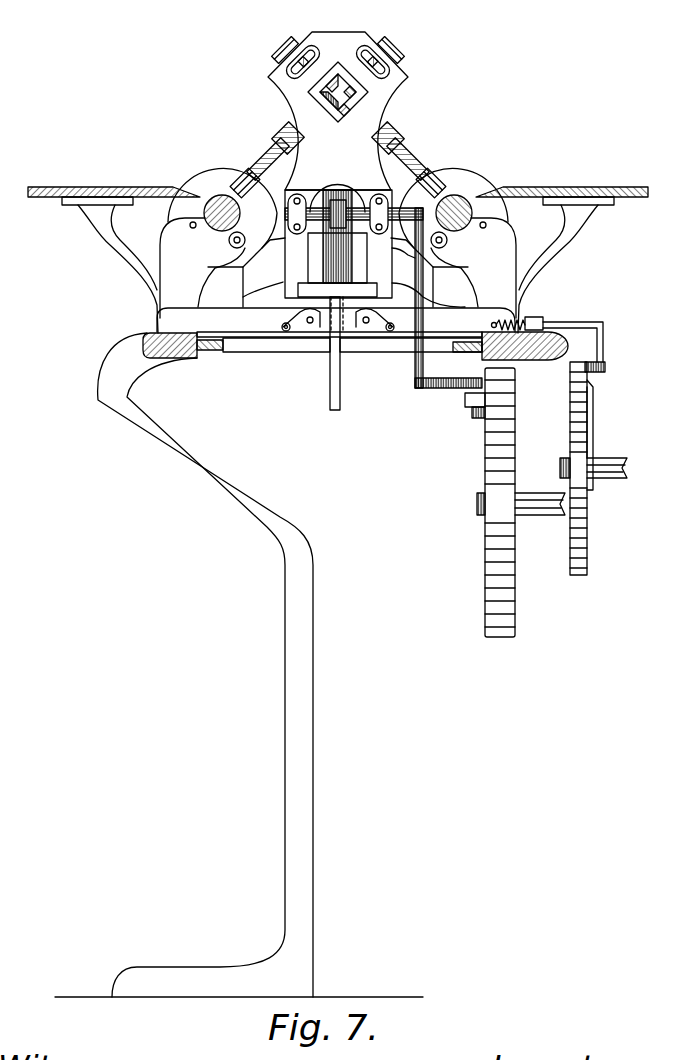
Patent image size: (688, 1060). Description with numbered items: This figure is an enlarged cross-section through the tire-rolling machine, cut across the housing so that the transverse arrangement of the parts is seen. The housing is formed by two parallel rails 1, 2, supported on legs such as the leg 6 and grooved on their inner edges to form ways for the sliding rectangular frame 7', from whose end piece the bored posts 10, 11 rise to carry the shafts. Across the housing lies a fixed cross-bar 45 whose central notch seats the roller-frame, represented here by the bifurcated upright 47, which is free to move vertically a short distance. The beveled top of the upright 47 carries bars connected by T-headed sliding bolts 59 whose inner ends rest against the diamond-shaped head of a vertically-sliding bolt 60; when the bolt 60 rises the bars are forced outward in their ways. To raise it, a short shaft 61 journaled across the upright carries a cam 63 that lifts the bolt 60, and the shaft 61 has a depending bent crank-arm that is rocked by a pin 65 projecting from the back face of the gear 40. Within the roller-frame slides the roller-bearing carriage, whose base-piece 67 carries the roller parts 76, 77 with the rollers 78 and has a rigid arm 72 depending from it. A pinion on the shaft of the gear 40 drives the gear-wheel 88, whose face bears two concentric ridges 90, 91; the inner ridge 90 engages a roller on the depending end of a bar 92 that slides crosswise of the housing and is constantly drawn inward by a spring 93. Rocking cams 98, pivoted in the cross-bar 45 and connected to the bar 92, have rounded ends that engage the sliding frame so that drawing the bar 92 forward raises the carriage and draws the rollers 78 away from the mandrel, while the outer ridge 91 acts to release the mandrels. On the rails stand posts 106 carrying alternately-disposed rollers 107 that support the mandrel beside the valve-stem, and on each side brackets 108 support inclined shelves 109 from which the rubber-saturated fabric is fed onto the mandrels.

The bifurcated upright 47 is at (338, 154).
The sliding bolt 59 is at (338, 71).
The vertically-sliding bolt 60 is at (332, 122).
The roller-carrying part 76 is at (334, 136).
The roller-carrying part 77 is at (258, 150).
The roller 78 is at (233, 181).
The roller 107 is at (333, 230).
The post 106 is at (338, 243).
The bracket 108 is at (338, 269).
The shelf 109 is at (338, 187).
The cam 63 is at (320, 200).
The short shaft 61 is at (415, 208).
The post 10 is at (246, 272).
The post 11 is at (429, 272).
The cross-bar 45 is at (264, 290).
The base-piece 67 is at (298, 291).
The rocking cam 98 is at (300, 313).
The spring 93 is at (518, 316).
The bar 92 is at (574, 337).
The rail 2 is at (183, 360).
The rectangular frame 7' is at (339, 353).
The rigid arm 72 is at (343, 378).
The rail 1 is at (542, 361).
The pin 65 is at (465, 400).
The gear 40 is at (511, 502).
The gear-wheel 88 is at (593, 468).
The ridge 90 is at (601, 435).
The ridge 91 is at (593, 389).
The leg 6 is at (284, 584).